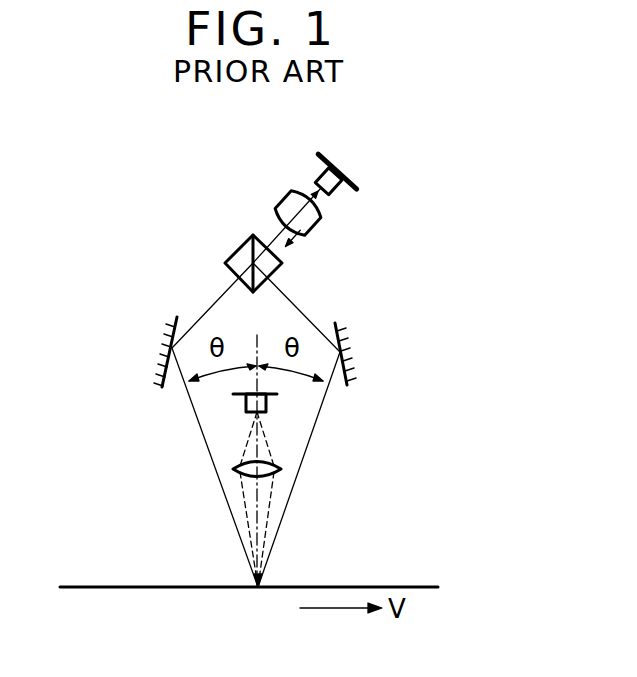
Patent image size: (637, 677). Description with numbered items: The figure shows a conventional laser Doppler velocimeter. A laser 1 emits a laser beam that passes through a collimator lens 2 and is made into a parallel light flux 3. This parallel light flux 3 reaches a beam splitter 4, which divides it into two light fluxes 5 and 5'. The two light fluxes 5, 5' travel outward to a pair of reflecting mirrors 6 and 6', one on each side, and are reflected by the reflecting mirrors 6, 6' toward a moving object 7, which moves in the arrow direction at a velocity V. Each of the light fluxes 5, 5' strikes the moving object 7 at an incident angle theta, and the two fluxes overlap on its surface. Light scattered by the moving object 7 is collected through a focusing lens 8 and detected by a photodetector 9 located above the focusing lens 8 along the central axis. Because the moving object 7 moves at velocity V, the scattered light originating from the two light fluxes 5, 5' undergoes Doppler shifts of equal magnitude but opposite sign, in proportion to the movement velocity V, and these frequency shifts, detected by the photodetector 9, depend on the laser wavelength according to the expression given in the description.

The laser 1 is at (322, 170).
The collimator lens 2 is at (290, 194).
The parallel light flux 3 is at (273, 227).
The beam splitter 4 is at (225, 261).
The light flux 5 is at (208, 305).
The light flux 5' is at (301, 305).
The reflecting mirror 6 is at (140, 351).
The reflecting mirror 6' is at (370, 348).
The moving object 7 is at (133, 585).
The focusing lens 8 is at (240, 467).
The photodetector 9 is at (243, 402).